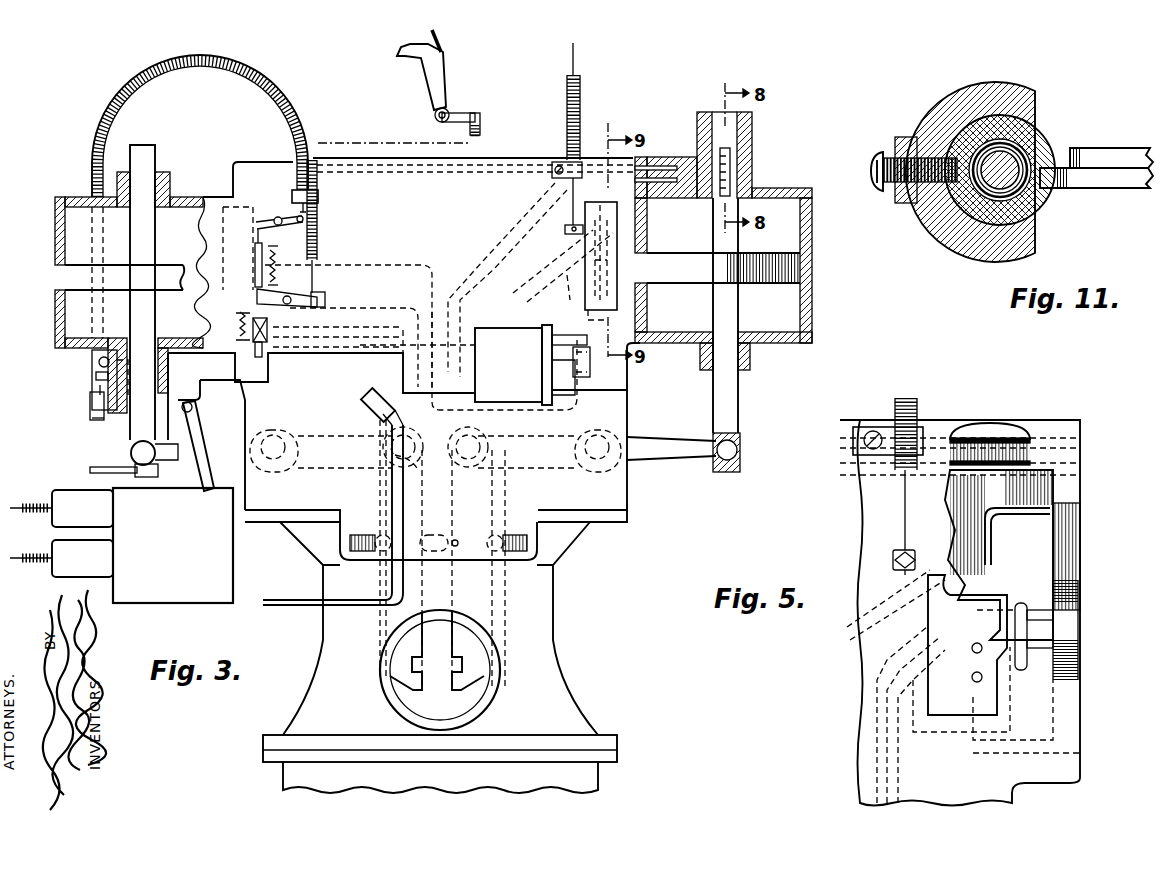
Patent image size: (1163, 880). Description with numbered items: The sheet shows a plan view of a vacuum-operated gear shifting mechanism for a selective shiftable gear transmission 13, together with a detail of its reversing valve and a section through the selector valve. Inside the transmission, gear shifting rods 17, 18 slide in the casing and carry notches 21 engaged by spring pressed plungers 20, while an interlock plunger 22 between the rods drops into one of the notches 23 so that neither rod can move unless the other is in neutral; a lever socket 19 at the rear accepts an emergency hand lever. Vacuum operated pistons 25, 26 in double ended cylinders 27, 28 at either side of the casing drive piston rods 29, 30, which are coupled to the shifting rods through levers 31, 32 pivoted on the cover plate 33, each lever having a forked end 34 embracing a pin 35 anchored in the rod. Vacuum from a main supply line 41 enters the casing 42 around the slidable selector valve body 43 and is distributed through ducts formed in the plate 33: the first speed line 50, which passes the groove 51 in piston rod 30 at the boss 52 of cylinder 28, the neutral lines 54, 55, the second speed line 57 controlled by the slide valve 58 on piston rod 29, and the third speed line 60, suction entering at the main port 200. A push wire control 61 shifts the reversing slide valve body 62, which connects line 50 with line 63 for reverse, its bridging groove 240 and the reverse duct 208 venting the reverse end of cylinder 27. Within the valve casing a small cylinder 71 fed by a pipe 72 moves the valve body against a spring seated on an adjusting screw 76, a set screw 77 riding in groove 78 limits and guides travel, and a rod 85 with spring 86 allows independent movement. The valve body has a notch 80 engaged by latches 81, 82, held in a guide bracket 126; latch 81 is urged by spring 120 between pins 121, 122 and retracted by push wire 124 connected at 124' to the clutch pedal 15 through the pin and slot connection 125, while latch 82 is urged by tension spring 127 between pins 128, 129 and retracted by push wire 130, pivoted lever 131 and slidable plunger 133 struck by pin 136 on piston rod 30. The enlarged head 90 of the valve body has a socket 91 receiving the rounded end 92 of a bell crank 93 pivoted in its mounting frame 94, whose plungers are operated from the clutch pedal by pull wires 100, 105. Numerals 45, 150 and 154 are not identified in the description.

In FIG. 3, the selective shiftable gear transmission 13 is at (505, 157).
In FIG. 5, the selective shiftable gear transmission 13 is at (1050, 420).
In FIG. 3, the clutch pedal 15 is at (446, 35).
In FIG. 3, the gear shifting rod 17 is at (475, 657).
In FIG. 3, the gear shifting rod 18 is at (400, 665).
In FIG. 3, the lever socket 19 is at (410, 696).
In FIG. 3, the spring pressed plunger 20 is at (503, 535).
In FIG. 3, the notch 21 is at (380, 520).
In FIG. 3, the plunger 22 is at (432, 535).
In FIG. 3, the notch 23 is at (465, 538).
In FIG. 3, the vacuum operated piston 25 is at (805, 267).
In FIG. 5, the vacuum operated piston 25 is at (1067, 620).
In FIG. 3, the vacuum operated piston 26 is at (78, 268).
In FIG. 3, the double ended cylinder 27 is at (812, 298).
In FIG. 3, the double ended cylinder 28 is at (55, 318).
In FIG. 3, the piston rod 29 is at (726, 398).
In FIG. 3, the piston rod 30 is at (138, 430).
In FIG. 3, the lever 31 is at (675, 450).
In FIG. 3, the lever 32 is at (218, 447).
In FIG. 3, the plate 33 is at (607, 403).
In FIG. 5, the plate 33 is at (862, 747).
In FIG. 3, the forked end 34 is at (415, 470).
In FIG. 3, the pin 35 is at (456, 450).
In FIG. 3, the main supply line 41 is at (392, 478).
In FIG. 3, the casing 42 is at (351, 378).
In FIG. 11, the casing 42 is at (971, 82).
In FIG. 11, the selector valve body 43 is at (1022, 200).
In FIG. 3, the arm 45 is at (211, 378).
In FIG. 3, the line 50 is at (317, 420).
In FIG. 5, the line 50 is at (905, 765).
In FIG. 3, the groove 51 is at (96, 370).
In FIG. 3, the boss 52 is at (100, 392).
In FIG. 3, the line 54 is at (514, 406).
In FIG. 5, the line 54 is at (877, 696).
In FIG. 3, the line 55 is at (407, 268).
In FIG. 3, the line 57 is at (523, 213).
In FIG. 5, the line 57 is at (987, 440).
In FIG. 3, the slide valve 58 is at (738, 170).
In FIG. 3, the line 60 is at (380, 311).
In FIG. 3, the push wire control 61 is at (578, 48).
In FIG. 5, the push wire control 61 is at (905, 515).
In FIG. 3, the slide valve body 62 is at (593, 252).
In FIG. 5, the slide valve body 62 is at (937, 598).
In FIG. 3, the line 63 is at (647, 222).
In FIG. 5, the line 63 is at (977, 542).
In FIG. 3, the small cylinder 71 is at (500, 338).
In FIG. 3, the pipe 72 is at (582, 333).
In FIG. 3, the adjusting screw 76 is at (583, 360).
In FIG. 11, the set screw 77 is at (875, 160).
In FIG. 3, the groove 78 is at (240, 397).
In FIG. 11, the groove 78 is at (946, 188).
In FIG. 3, the notch 80 is at (228, 370).
In FIG. 11, the notch 80 is at (1045, 136).
In FIG. 3, the latch 81 is at (268, 312).
In FIG. 11, the latch 81 is at (1106, 152).
In FIG. 3, the latch 82 is at (255, 257).
In FIG. 11, the latch 82 is at (1120, 178).
In FIG. 11, the rod 85 is at (1000, 178).
In FIG. 11, the spring 86 is at (1002, 145).
In FIG. 3, the enlarged head 90 is at (175, 357).
In FIG. 3, the socket 91 is at (176, 400).
In FIG. 3, the rounded end 92 is at (183, 412).
In FIG. 3, the bell crank 93 is at (200, 475).
In FIG. 3, the mounting frame 94 is at (196, 553).
In FIG. 3, the pull wire 100 is at (13, 505).
In FIG. 3, the pull wire 105 is at (13, 556).
In FIG. 3, the spring 120 is at (236, 322).
In FIG. 3, the pin 121 is at (240, 312).
In FIG. 3, the pin 122 is at (238, 336).
In FIG. 3, the push wire 124 is at (346, 209).
In FIG. 3, the connection 124' is at (484, 114).
In FIG. 3, the pin and slot connection 125 is at (257, 290).
In FIG. 3, the guide bracket 126 is at (266, 350).
In FIG. 3, the tension spring 127 is at (276, 258).
In FIG. 3, the pin 128 is at (272, 256).
In FIG. 3, the pin 129 is at (278, 275).
In FIG. 3, the push wire 130 is at (92, 398).
In FIG. 3, the pivoted lever 131 is at (268, 219).
In FIG. 3, the slidable plunger 133 is at (92, 416).
In FIG. 3, the pin 136 is at (118, 467).
In FIG. 3, the block 150 is at (320, 212).
In FIG. 3, the spring 154 is at (92, 418).
In FIG. 3, the main port 200 is at (366, 427).
In FIG. 3, the reverse duct 208 is at (513, 293).
In FIG. 5, the reverse duct 208 is at (857, 628).
In FIG. 3, the bridging groove 240 is at (649, 297).
In FIG. 5, the bridging groove 240 is at (975, 655).